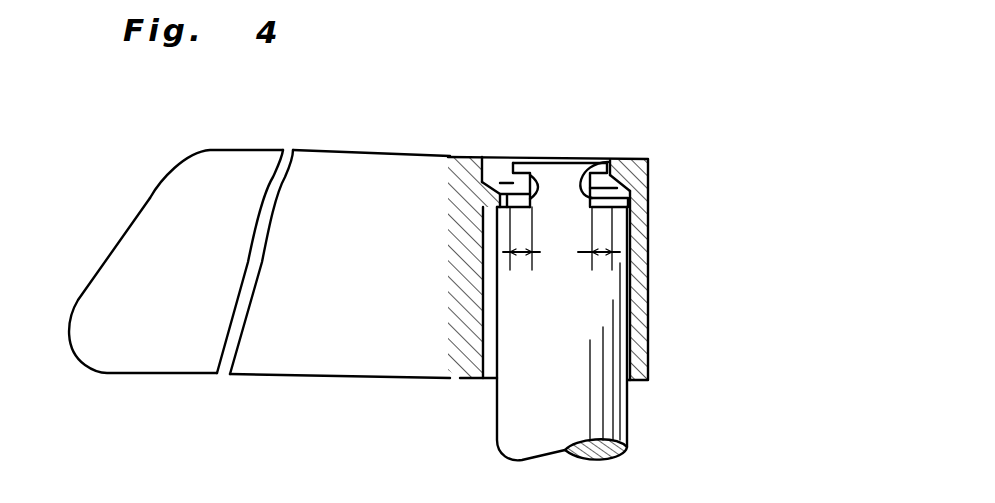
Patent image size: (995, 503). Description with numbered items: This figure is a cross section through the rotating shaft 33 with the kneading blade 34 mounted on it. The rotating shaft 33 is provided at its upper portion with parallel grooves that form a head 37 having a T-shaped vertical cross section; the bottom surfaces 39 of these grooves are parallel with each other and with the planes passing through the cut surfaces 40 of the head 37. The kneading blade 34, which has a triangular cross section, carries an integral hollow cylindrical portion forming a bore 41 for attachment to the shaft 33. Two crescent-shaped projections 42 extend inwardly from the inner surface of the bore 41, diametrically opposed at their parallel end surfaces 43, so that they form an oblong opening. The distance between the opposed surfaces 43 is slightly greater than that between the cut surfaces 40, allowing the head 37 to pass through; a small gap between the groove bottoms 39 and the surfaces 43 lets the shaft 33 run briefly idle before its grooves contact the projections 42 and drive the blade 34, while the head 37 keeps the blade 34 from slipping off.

The rotating shaft 33 is at (628, 403).
The kneading blade 34 is at (140, 207).
The head 37 is at (560, 168).
The bottom surfaces 39 is at (540, 178).
The cut surfaces 40 is at (508, 157).
The bore 41 is at (637, 290).
The crescent-shaped projections 42 is at (487, 187).
The parallel end surfaces 43 is at (582, 207).